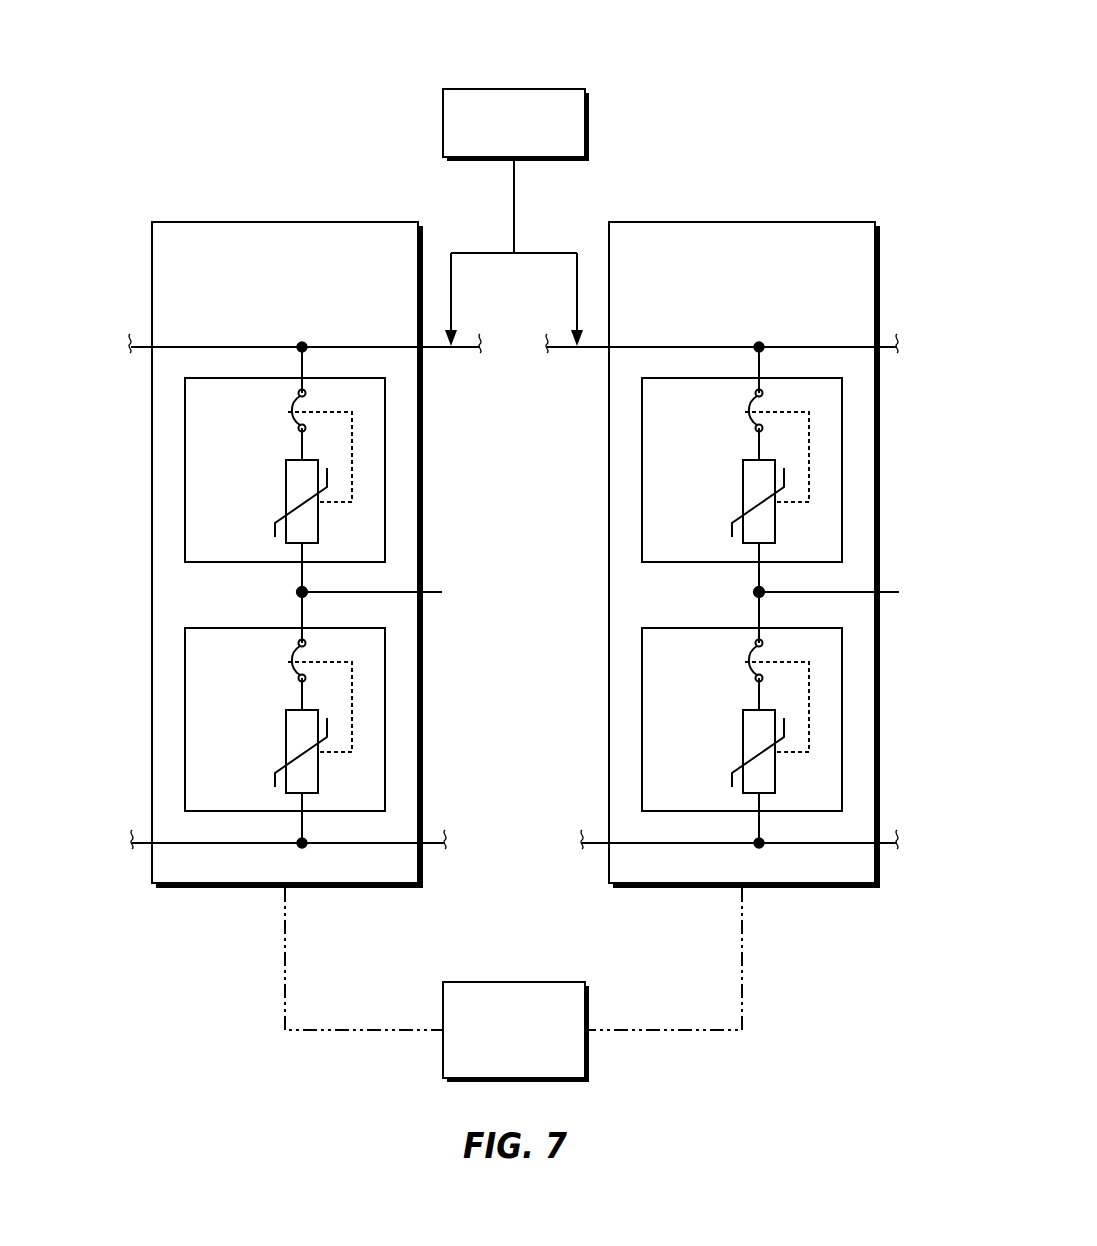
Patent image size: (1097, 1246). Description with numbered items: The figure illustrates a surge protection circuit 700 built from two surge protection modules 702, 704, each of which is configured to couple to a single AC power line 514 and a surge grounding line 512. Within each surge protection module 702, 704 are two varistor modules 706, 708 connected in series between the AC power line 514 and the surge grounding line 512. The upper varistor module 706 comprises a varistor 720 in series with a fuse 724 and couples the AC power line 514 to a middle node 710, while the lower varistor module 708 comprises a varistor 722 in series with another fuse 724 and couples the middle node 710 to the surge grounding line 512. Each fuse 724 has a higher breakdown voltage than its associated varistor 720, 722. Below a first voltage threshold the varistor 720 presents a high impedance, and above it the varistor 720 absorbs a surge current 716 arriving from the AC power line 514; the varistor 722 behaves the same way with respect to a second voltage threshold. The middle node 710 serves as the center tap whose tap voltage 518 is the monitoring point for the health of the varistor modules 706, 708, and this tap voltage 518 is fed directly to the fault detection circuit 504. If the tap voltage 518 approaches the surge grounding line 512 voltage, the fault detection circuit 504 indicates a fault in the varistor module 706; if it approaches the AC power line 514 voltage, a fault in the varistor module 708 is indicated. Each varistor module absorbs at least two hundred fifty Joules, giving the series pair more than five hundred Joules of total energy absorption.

The surge protection circuit 700 is at (739, 28).
The surge current 716 is at (463, 88).
The surge protection module 702 is at (197, 222).
The surge protection module 704 is at (662, 222).
The AC power line 514 is at (139, 344).
The surge grounding line 512 is at (139, 840).
The varistor module 706 is at (185, 403).
The varistor module 708 is at (185, 655).
The fuse 724 is at (226, 411).
The varistor 720 is at (318, 527).
The varistor 722 is at (318, 773).
The tap voltage 518 is at (432, 588).
The middle node 710 is at (306, 593).
The fault detection circuit 504 is at (463, 982).